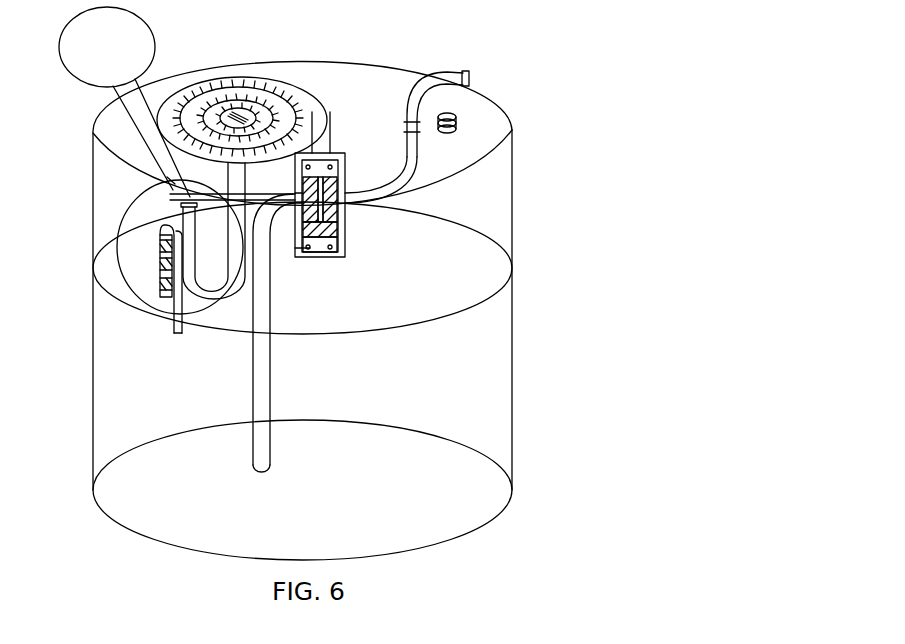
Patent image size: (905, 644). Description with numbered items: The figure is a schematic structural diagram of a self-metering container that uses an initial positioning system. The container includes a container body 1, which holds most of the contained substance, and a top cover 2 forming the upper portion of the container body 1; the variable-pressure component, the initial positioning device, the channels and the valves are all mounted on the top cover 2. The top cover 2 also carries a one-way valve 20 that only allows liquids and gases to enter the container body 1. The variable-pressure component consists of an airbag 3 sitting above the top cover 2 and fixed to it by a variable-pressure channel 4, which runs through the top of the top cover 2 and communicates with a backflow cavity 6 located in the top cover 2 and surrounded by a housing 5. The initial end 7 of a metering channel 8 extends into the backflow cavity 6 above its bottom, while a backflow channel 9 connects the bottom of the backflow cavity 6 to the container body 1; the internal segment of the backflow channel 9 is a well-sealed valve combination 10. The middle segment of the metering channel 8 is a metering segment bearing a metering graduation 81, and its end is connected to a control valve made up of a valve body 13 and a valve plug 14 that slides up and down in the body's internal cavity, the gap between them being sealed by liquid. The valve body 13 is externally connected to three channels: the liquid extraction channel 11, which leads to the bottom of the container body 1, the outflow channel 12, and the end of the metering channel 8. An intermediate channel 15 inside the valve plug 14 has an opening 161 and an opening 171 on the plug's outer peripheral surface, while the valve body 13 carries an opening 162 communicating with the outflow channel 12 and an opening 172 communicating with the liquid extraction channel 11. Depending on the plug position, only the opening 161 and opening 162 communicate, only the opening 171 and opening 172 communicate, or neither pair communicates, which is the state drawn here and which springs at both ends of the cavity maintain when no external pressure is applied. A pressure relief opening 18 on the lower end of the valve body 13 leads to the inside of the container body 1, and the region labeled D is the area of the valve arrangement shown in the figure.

The container body 1 is at (490, 387).
The top cover 2 is at (493, 207).
The airbag 3 is at (150, 38).
The variable-pressure channel 4 is at (135, 107).
The housing 5 is at (168, 194).
The backflow cavity 6 is at (165, 212).
The initial end 7 is at (167, 177).
The metering channel 8 is at (190, 265).
The backflow channel 9 is at (181, 328).
The valve combination 10 is at (160, 263).
The liquid extraction channel 11 is at (262, 393).
The outflow channel 12 is at (413, 142).
The valve body 13 is at (330, 162).
The valve plug 14 is at (337, 232).
The intermediate channel 15 is at (318, 185).
The opening 161 is at (334, 192).
The opening 162 is at (341, 209).
The opening 171 is at (313, 249).
The opening 172 is at (298, 194).
The pressure relief opening 18 is at (318, 250).
The one-way valve 20 is at (452, 113).
The metering graduation 81 is at (280, 90).
The dispensing unit D is at (127, 283).